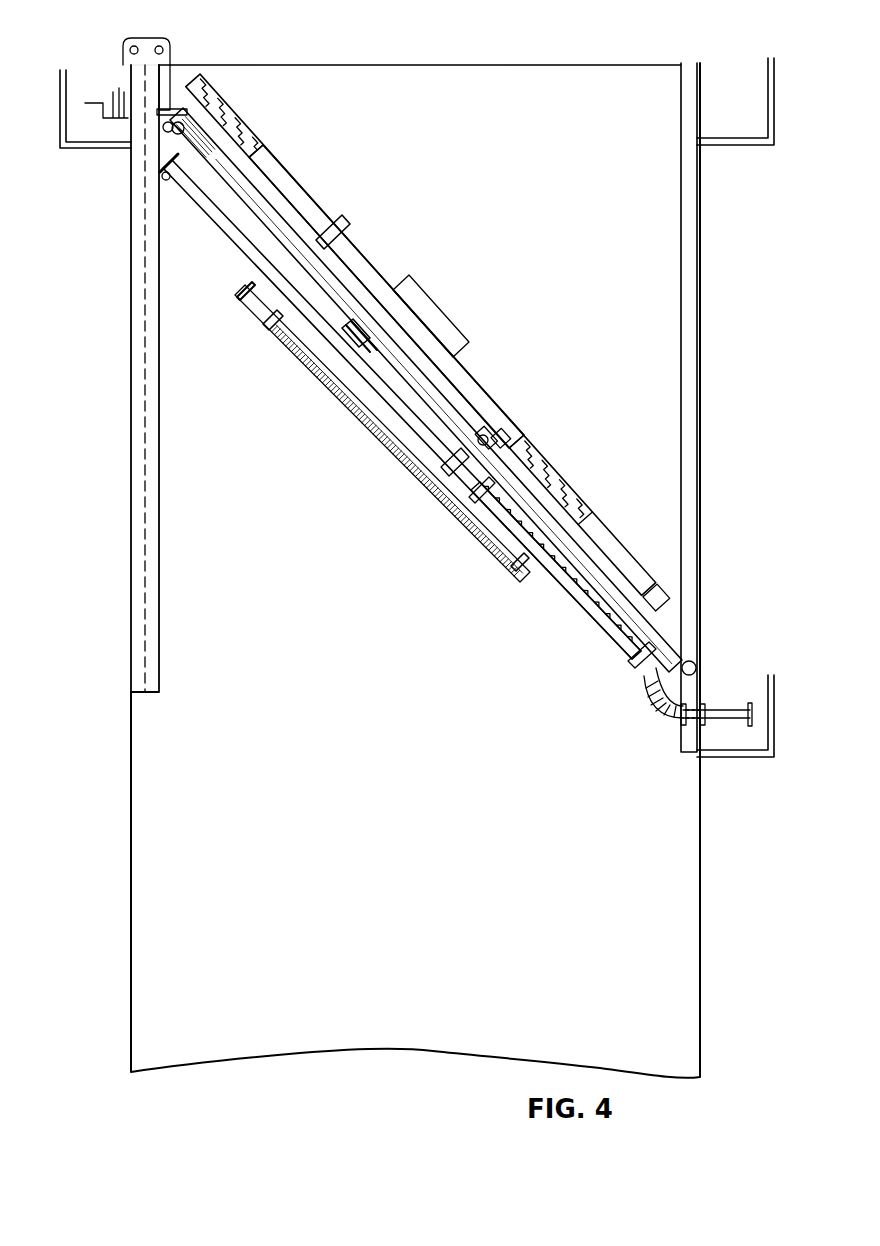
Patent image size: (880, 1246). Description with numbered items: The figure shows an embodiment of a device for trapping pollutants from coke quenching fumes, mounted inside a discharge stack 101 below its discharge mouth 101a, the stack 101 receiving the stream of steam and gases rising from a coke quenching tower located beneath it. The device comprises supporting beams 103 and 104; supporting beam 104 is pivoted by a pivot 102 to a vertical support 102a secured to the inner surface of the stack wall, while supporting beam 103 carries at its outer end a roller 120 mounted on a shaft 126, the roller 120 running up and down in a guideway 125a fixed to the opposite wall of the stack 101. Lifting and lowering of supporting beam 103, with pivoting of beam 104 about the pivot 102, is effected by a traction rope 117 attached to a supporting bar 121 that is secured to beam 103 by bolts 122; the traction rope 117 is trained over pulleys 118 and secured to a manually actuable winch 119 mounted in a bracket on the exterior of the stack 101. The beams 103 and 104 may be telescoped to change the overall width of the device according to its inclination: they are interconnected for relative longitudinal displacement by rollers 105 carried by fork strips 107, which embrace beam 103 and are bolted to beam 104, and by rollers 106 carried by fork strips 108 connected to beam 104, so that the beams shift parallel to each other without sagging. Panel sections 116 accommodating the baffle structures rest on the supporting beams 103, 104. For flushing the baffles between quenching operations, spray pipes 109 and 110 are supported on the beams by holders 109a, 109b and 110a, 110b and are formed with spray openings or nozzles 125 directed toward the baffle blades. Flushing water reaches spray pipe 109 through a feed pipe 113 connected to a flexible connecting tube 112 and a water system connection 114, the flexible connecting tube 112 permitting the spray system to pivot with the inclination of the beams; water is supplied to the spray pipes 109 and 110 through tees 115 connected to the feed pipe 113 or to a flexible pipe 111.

The discharge stack 101 is at (437, 851).
The discharge mouth 101a is at (478, 66).
The pivot 102 is at (694, 664).
The vertical support 102a is at (681, 258).
The supporting beam 103 is at (345, 252).
The supporting beam 104 is at (545, 560).
The rollers 105 is at (410, 310).
The rollers 106 is at (492, 436).
The fork strips 107 is at (372, 340).
The fork strips 108 is at (492, 428).
The spray pipe 109 is at (250, 284).
The holder 109a is at (166, 182).
The holder 109b is at (445, 470).
The spray pipe 110 is at (600, 634).
The holder 110a is at (470, 500).
The holder 110b is at (634, 662).
The flexible pipe 111 is at (345, 402).
The flexible connecting tube 112 is at (655, 710).
The feed pipe 113 is at (505, 548).
The water system connection 114 is at (715, 708).
The tees 115 is at (266, 328).
The panel sections 116 is at (412, 280).
The traction rope 117 is at (215, 80).
The pulleys 118 is at (174, 18).
The winch 119 is at (118, 122).
The roller 120 is at (158, 102).
The supporting bar 121 is at (165, 116).
The bolts 122 is at (245, 125).
The spray openings 125 is at (335, 218).
The guideway 125a is at (150, 618).
The shaft 126 is at (175, 134).